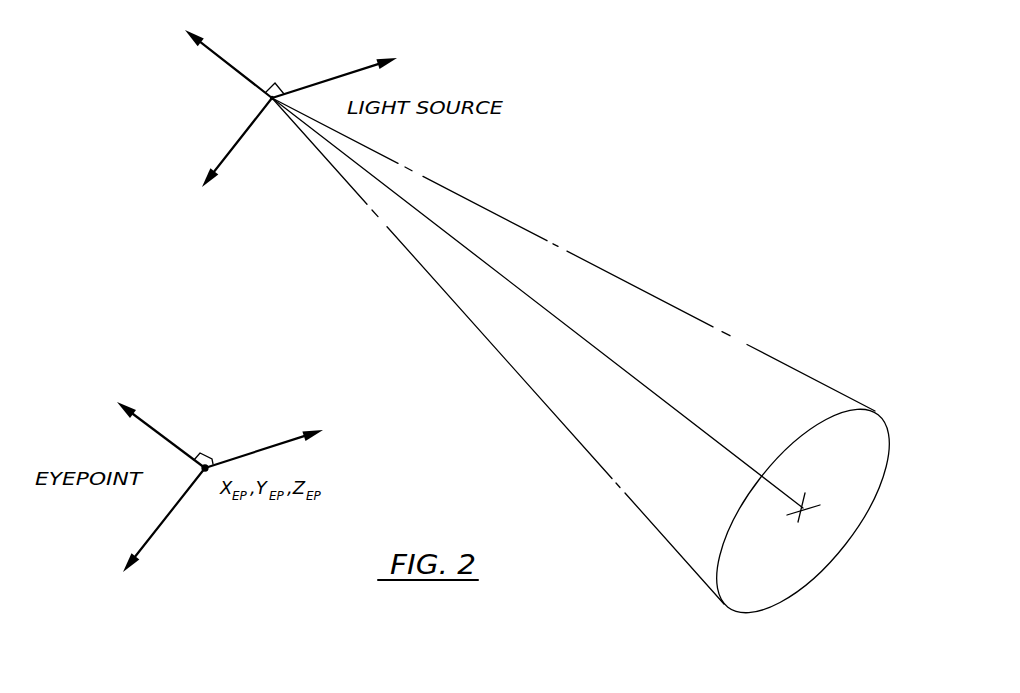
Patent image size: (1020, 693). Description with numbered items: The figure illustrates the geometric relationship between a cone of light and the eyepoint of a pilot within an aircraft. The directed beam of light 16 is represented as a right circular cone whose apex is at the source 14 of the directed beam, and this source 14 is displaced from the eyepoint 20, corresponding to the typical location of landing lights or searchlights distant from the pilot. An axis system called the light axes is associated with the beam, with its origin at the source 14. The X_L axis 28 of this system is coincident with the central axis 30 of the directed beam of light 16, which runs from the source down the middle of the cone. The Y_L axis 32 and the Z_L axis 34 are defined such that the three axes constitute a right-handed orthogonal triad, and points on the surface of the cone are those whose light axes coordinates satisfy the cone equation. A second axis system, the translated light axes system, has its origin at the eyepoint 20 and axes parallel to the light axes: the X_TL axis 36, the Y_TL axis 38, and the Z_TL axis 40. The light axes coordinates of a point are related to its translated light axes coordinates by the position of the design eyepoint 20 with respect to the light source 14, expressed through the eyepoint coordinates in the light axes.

The source of the directed beam of light 14 is at (270, 85).
The X_L axis 28 is at (230, 72).
The Y_L axis 32 is at (363, 63).
The Z_L axis 34 is at (243, 140).
The directed beam of light 16 is at (607, 302).
The central axis of the directed beam of light 30 is at (697, 423).
The eyepoint 20 is at (203, 452).
The X_TL axis 36 is at (163, 442).
The Y_TL axis 38 is at (245, 452).
The Z_TL axis 40 is at (177, 503).